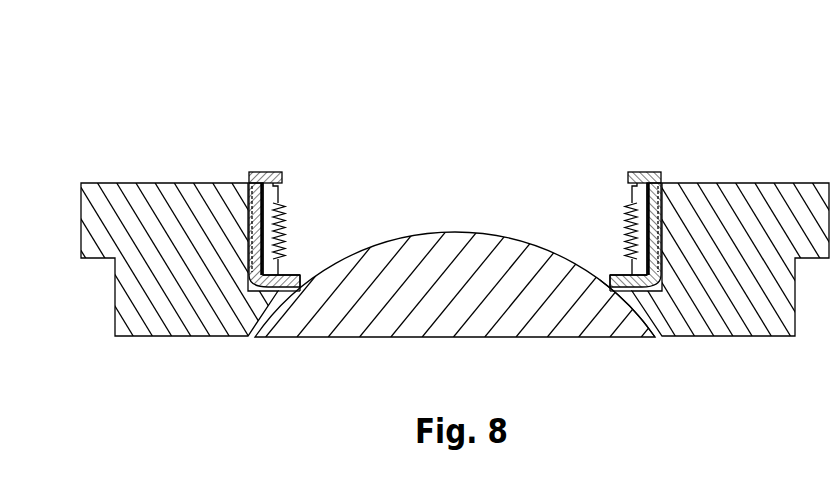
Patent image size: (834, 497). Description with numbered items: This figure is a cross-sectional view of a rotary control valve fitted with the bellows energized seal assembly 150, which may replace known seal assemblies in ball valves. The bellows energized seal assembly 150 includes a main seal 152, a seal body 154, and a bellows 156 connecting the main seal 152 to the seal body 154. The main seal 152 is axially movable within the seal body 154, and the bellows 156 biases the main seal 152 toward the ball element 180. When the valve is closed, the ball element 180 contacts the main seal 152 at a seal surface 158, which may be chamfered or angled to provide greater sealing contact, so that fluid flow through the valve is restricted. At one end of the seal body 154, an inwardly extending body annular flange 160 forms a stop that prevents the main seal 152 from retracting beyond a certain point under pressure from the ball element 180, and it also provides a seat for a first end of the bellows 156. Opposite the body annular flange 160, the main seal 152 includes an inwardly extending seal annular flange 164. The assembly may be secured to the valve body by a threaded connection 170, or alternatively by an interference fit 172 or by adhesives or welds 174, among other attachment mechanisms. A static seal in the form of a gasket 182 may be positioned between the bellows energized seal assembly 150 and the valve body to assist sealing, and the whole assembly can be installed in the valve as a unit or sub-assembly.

The bellows energized seal assembly 150 is at (632, 54).
The main seal 152 is at (613, 275).
The seal body 154 is at (648, 172).
The bellows 156 is at (627, 215).
The seal surface 158 is at (615, 283).
The body annular flange 160 is at (637, 172).
The seal annular flange 164 is at (627, 283).
The threaded connection 170 is at (663, 197).
The interference fit 172 is at (250, 182).
The adhesives or welds 174 is at (672, 178).
The ball element 180 is at (457, 232).
The gasket 182 is at (250, 190).